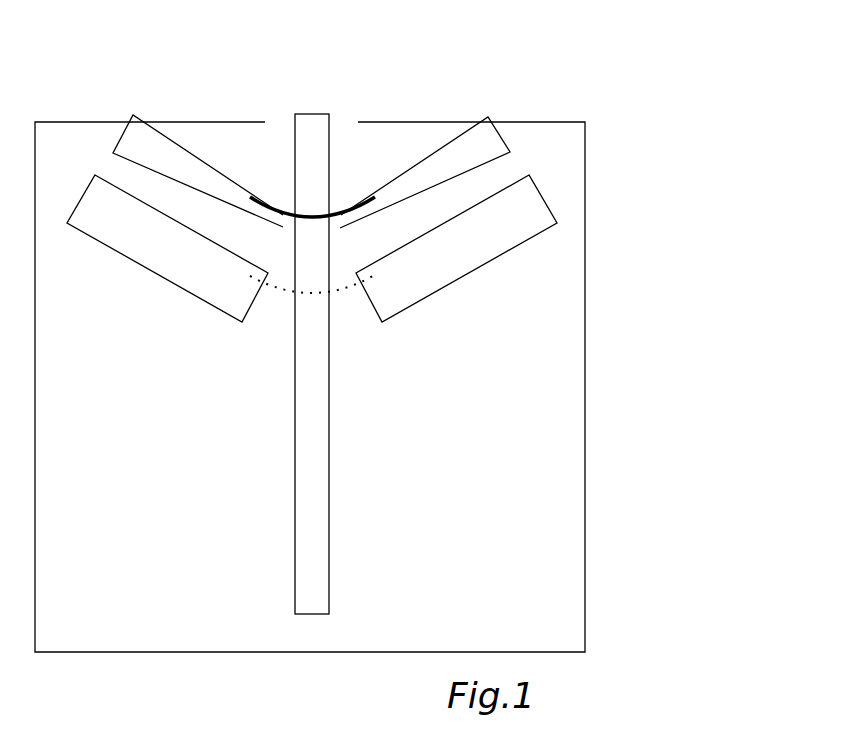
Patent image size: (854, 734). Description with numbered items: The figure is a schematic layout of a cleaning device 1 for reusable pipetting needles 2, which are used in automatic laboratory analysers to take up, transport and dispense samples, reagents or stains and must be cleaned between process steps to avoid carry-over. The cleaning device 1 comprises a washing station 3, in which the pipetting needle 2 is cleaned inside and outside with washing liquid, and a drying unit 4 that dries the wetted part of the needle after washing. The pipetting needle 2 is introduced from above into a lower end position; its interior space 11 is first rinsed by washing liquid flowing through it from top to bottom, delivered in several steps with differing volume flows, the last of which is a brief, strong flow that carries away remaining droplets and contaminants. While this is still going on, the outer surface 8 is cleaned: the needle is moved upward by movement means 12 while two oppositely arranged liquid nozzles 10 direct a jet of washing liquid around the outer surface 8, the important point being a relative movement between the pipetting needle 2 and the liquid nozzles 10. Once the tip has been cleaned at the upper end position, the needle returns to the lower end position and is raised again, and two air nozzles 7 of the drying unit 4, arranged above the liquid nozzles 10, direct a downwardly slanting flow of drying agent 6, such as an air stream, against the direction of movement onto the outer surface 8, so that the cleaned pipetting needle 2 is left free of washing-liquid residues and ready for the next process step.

The cleaning device 1 is at (632, 190).
The pipetting needle 2 is at (317, 578).
The washing station 3 is at (363, 332).
The drying unit 4 is at (363, 172).
The flow of drying agent 6 is at (287, 207).
The air nozzle 7 is at (487, 142).
The outer surface of the pipetting needle 8 is at (328, 470).
The liquid nozzle 10 is at (165, 262).
The interior space of the pipetting needle 11 is at (315, 493).
The movement means 12 is at (445, 568).